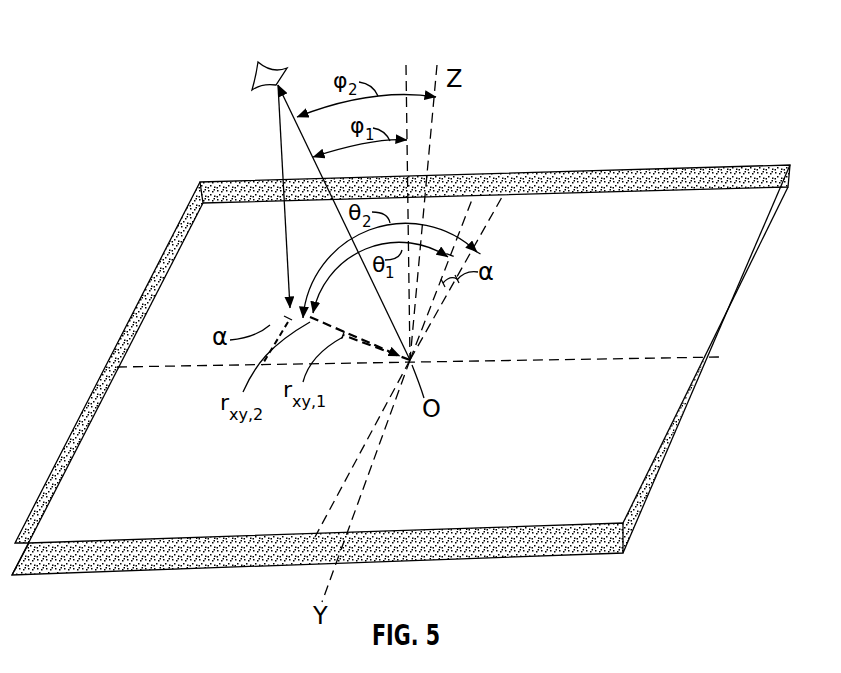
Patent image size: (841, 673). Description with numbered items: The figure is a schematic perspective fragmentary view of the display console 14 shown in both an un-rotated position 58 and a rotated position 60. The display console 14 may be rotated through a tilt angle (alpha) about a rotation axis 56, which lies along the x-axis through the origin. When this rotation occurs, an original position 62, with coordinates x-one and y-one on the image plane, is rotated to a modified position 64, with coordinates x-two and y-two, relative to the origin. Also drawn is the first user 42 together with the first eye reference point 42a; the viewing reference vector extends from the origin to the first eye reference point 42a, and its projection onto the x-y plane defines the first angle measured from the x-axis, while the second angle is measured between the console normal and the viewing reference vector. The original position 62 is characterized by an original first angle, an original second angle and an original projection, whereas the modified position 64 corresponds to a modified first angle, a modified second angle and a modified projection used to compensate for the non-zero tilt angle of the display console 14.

The display console 14 is at (410, 321).
The first user 42 is at (304, 187).
The first eye reference point 42a is at (256, 93).
The rotation axis 56 is at (597, 361).
The un-rotated position 58 is at (762, 166).
The rotated position 60 is at (752, 280).
The original position 62 is at (290, 303).
The modified position 64 is at (287, 315).